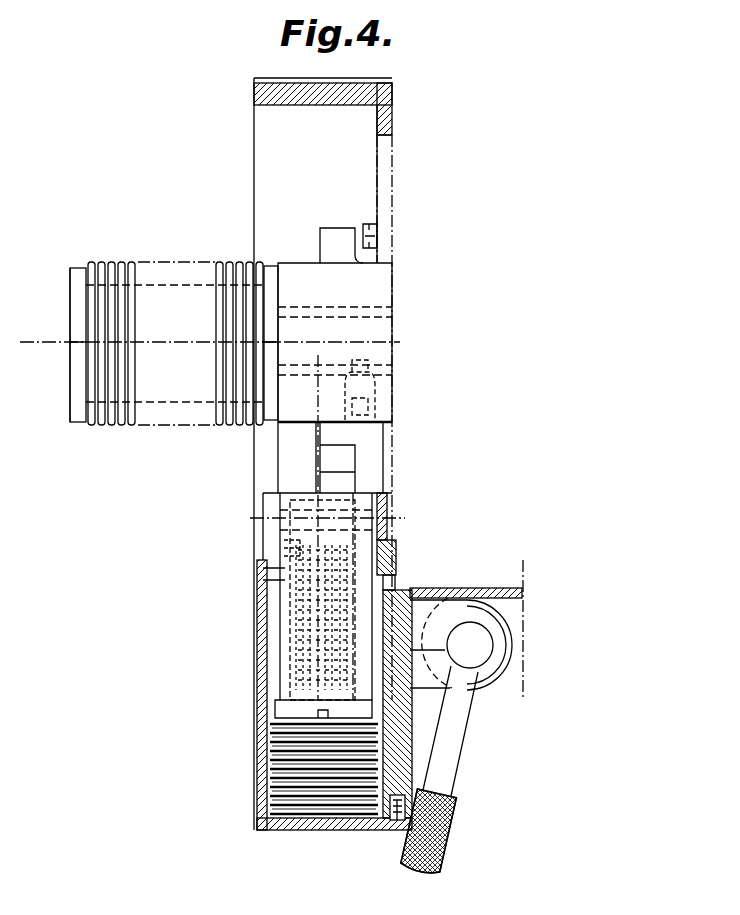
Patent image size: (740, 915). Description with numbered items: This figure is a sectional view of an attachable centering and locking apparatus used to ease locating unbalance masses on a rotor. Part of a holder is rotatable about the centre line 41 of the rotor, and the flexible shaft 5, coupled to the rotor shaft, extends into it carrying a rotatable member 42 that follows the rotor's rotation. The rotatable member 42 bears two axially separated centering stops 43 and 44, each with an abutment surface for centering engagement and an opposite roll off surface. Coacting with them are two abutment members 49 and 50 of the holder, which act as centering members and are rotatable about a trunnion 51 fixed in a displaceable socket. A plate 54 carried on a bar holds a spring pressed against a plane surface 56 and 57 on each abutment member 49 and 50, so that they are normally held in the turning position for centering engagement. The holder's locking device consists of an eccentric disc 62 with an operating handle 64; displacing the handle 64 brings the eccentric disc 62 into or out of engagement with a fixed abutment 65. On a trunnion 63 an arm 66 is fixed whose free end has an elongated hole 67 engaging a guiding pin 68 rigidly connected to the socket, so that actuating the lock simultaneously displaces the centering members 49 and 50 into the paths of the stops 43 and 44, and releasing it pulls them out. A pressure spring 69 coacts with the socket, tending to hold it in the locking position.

The flexible shaft 5 is at (132, 423).
The centre line 41 is at (175, 342).
The rotatable member 42 is at (383, 290).
The centering stop 43 is at (300, 433).
The centering stop 44 is at (342, 232).
The abutment member 49 is at (296, 468).
The abutment member 50 is at (358, 455).
The trunnion 51 is at (300, 510).
The plate 54 is at (260, 553).
The plane surface 56 is at (262, 537).
The plane surface 57 is at (400, 537).
The eccentric disc 62 is at (500, 607).
The trunnion 63 is at (475, 645).
The operating handle 64 is at (455, 818).
The fixed abutment 65 is at (493, 588).
The arm 66 is at (420, 618).
The elongated hole 67 is at (398, 566).
The guiding pin 68 is at (318, 608).
The pressure spring 69 is at (270, 740).